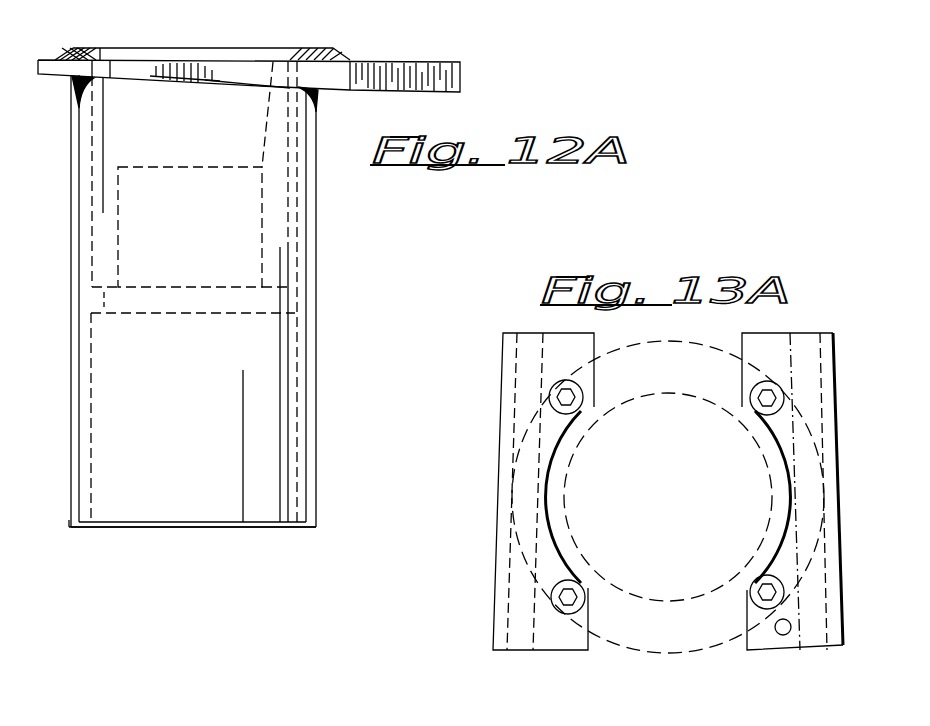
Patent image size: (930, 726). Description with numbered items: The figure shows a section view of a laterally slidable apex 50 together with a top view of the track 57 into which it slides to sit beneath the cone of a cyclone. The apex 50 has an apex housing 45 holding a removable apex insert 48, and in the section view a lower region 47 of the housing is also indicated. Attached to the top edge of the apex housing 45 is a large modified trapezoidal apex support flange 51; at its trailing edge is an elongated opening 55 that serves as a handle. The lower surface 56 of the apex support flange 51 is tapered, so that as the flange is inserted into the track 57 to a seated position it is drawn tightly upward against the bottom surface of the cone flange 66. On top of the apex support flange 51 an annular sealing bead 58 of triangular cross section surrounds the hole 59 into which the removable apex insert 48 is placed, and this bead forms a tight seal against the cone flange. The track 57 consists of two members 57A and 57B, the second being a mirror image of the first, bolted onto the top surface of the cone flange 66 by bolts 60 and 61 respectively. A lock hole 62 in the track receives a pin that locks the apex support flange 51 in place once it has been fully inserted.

In FIG. 12A, the apex housing 45 is at (313, 252).
In FIG. 12A, the lower opening 47 is at (288, 301).
In FIG. 12A, the removable apex insert 48 is at (281, 191).
In FIG. 12A, the laterally slidable apex 50 is at (336, 363).
In FIG. 12A, the apex support flange 51 is at (230, 93).
In FIG. 12A, the elongated opening 55 is at (404, 62).
In FIG. 12A, the lower surface 56 is at (190, 86).
In FIG. 12A, the sealing bead 58 is at (323, 52).
In FIG. 12A, the hole 59 is at (300, 60).
In FIG. 13A, the track 57 is at (615, 493).
In FIG. 13A, the track member 57A is at (566, 340).
In FIG. 13A, the track member 57B is at (778, 333).
In FIG. 13A, the bolts 60 is at (574, 394).
In FIG. 13A, the bolts 61 is at (756, 394).
In FIG. 13A, the lock hole 62 is at (783, 635).
In FIG. 13A, the flange 66 is at (664, 352).